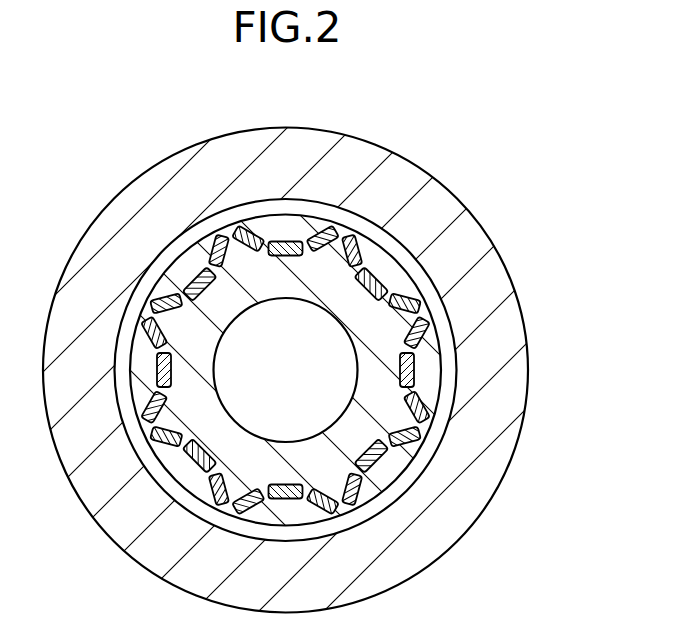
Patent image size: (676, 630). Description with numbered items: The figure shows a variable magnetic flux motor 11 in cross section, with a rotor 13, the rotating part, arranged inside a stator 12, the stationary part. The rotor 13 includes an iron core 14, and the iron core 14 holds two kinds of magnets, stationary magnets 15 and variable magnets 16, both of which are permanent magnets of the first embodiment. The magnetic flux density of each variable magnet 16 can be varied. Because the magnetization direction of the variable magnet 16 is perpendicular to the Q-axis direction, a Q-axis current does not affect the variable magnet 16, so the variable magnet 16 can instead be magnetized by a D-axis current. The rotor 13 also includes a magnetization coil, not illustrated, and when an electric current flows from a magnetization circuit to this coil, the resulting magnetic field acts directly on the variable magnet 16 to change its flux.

The variable magnetic flux motor 11 is at (338, 315).
The stator 12 is at (517, 450).
The rotor 13 is at (338, 315).
The iron core 14 is at (398, 289).
The stationary magnets 15 is at (420, 307).
The variable magnets 16 is at (450, 338).